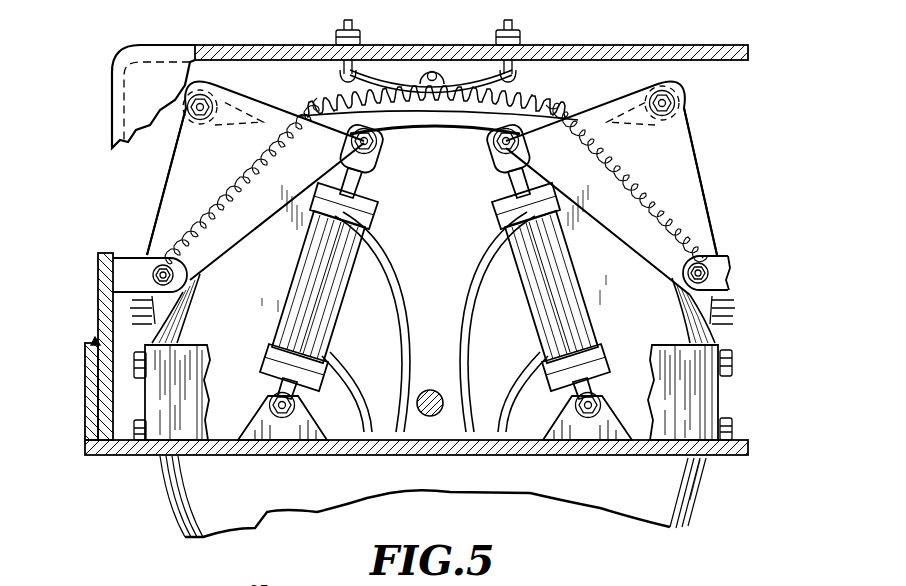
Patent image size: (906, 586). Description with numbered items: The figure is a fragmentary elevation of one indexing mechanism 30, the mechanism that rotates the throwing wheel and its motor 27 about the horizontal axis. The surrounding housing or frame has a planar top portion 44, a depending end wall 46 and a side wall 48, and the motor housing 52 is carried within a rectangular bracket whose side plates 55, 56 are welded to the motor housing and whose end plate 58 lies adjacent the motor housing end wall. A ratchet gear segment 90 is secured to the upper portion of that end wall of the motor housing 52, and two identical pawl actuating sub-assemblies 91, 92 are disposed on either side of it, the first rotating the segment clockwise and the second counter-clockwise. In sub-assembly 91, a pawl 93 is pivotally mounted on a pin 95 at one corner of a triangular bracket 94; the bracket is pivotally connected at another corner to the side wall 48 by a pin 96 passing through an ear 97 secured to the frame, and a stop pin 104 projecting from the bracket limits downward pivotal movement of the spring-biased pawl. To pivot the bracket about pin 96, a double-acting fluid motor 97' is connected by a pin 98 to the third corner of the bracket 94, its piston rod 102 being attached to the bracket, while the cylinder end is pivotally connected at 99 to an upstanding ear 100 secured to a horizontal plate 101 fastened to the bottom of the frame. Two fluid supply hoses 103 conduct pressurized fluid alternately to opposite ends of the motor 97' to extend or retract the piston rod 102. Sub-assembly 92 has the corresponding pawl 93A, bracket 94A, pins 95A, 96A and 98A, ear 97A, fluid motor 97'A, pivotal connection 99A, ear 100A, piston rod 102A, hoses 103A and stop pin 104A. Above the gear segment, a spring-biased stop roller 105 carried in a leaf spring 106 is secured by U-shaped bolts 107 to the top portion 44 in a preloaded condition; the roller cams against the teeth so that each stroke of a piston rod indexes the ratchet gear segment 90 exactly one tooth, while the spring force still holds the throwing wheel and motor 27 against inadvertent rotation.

The motor 27 is at (712, 486).
The indexing mechanism 30 is at (563, 99).
The planar top portion 44 is at (275, 45).
The end wall 46 is at (112, 80).
The side wall 48 is at (90, 410).
The motor housing 52 is at (388, 490).
The side plate 55 is at (152, 412).
The side plate 56 is at (724, 412).
The end plate 58 is at (206, 378).
The ratchet gear segment 90 is at (554, 112).
The pawl actuating sub-assembly 91 is at (158, 188).
The pawl actuating sub-assembly 92 is at (752, 220).
The pawl 93 is at (252, 100).
The pawl 93A is at (694, 146).
The triangular shaped bracket 94 is at (236, 238).
The triangular shaped bracket 94A is at (705, 197).
The pin 95 is at (190, 114).
The pin 95A is at (684, 108).
The pin 96 is at (158, 262).
The pin 96A is at (682, 302).
The ear 97 is at (158, 309).
The ear 97A is at (722, 286).
The double-acting piston fluid motor 97' is at (337, 287).
The double-acting piston fluid motor 97'A is at (526, 287).
The pin 98 is at (378, 153).
The pin 98A is at (492, 155).
The pivotal connection 99 is at (298, 411).
The pivotal connection 99A is at (600, 403).
The upstanding ear 100 is at (246, 438).
The upstanding ear 100A is at (550, 438).
The horizontal plate 101 is at (745, 449).
The piston rod 102 is at (355, 208).
The piston rod 102A is at (515, 196).
The fluid supply hoses 103 is at (398, 383).
The fluid supply hoses 103A is at (506, 392).
The stop pin 104 is at (242, 181).
The stop pin 104A is at (626, 182).
The stop roller 105 is at (432, 63).
The leaf spring 106 is at (365, 78).
The U-shaped bolts 107 is at (347, 24).